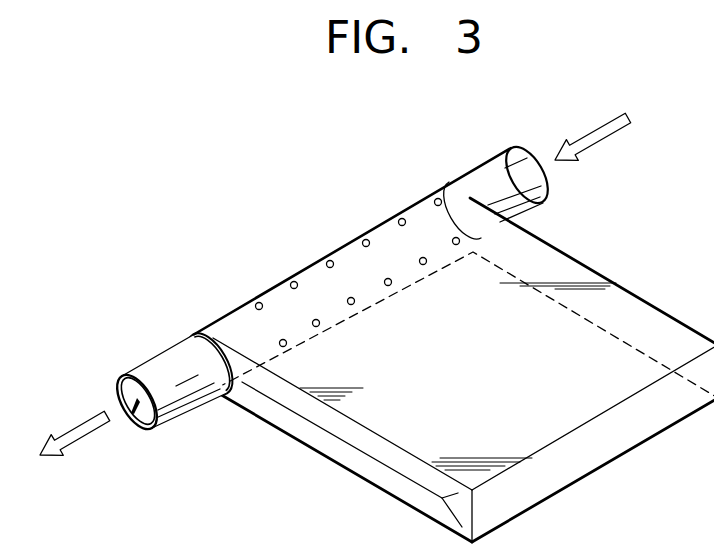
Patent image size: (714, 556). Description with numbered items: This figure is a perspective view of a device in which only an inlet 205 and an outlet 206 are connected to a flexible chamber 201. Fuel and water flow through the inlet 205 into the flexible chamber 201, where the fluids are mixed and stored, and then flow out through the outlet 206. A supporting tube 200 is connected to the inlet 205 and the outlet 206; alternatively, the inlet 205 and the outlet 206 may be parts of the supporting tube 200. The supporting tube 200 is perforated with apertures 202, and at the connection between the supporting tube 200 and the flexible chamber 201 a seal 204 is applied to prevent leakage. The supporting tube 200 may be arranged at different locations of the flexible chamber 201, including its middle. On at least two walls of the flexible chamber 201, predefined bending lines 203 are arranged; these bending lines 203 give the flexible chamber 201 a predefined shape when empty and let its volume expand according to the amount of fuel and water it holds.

The supporting tube 200 is at (384, 230).
The flexible chamber 201 is at (605, 455).
The apertures 202 is at (292, 276).
The bending lines 203 is at (340, 440).
The seal 204 is at (203, 352).
The inlet 205 is at (552, 172).
The outlet 206 is at (134, 414).